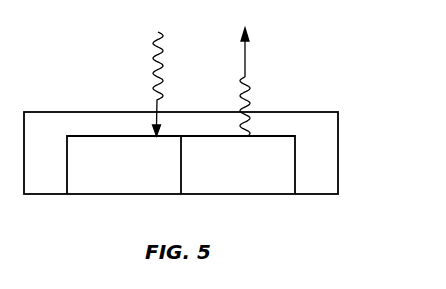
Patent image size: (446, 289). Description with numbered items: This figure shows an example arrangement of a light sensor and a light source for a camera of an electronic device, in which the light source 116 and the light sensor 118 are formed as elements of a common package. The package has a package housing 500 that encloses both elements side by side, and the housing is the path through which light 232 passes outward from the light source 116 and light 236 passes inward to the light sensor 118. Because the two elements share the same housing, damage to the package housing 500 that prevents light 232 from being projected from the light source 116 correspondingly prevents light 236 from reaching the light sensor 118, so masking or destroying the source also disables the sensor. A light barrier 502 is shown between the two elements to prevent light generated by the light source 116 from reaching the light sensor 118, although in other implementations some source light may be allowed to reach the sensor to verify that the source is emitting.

The package housing 500 is at (338, 128).
The light sensor 118 is at (88, 135).
The light source 116 is at (295, 170).
The light barrier 502 is at (181, 170).
The light 236 is at (152, 53).
The light 232 is at (255, 78).